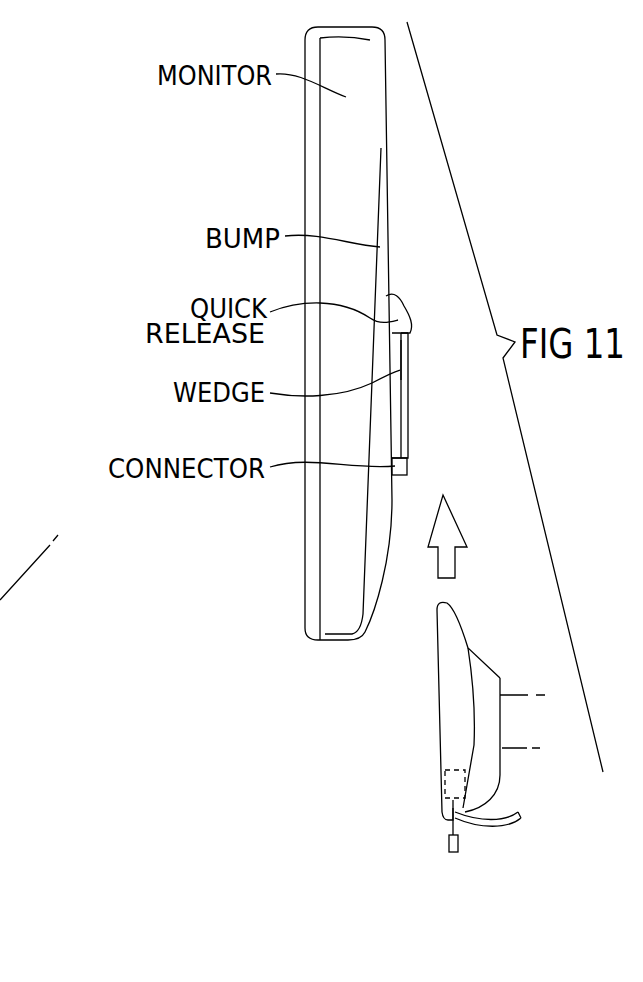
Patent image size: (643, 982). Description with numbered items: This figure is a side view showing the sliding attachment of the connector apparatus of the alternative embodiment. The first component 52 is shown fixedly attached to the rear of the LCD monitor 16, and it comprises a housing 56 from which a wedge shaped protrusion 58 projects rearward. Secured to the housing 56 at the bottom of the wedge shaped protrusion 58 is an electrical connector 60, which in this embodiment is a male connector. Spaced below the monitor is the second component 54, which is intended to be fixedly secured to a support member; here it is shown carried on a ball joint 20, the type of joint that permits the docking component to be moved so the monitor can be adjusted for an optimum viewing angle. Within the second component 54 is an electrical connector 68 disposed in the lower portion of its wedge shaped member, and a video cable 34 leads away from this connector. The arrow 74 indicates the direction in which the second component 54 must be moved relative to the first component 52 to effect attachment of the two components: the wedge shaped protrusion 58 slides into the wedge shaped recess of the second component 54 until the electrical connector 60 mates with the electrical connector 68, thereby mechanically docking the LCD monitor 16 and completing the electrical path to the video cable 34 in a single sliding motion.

The LCD monitor 16 is at (297, 160).
The first component 52 is at (406, 302).
The housing 56 is at (397, 402).
The wedge shaped protrusion 58 is at (403, 385).
The electrical connector 60 is at (398, 468).
The arrow 74 is at (445, 527).
The second component 54 is at (468, 640).
The ball joint 20 is at (527, 700).
The video cable 34 is at (505, 800).
The electrical connector 68 is at (448, 770).